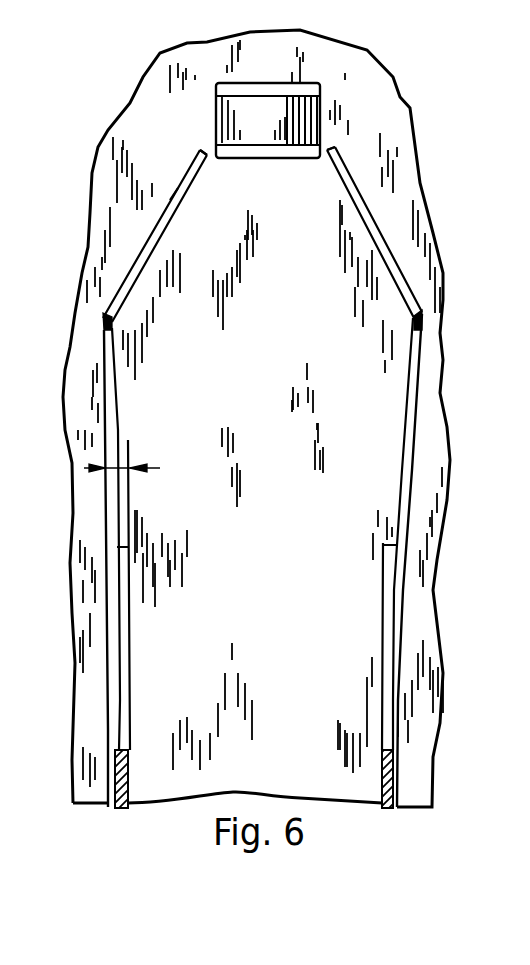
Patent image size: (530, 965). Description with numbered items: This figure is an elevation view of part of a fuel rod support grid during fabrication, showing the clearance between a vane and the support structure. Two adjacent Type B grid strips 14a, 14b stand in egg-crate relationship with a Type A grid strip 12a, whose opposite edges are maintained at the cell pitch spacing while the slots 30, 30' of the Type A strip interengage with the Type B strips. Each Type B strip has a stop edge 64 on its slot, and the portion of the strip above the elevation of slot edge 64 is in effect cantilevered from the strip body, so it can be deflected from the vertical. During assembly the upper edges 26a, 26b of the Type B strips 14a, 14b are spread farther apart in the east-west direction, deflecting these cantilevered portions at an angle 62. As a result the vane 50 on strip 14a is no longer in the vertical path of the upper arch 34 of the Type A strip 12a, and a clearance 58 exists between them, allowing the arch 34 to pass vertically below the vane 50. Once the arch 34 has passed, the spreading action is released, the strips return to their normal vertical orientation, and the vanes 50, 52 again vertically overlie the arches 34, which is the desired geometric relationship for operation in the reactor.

The Type A grid strip 12a is at (367, 58).
The upper arch 34 is at (240, 105).
The clearance 58 is at (209, 150).
The vane 50 is at (170, 197).
The vane 52 is at (343, 163).
The upper edge 26a is at (108, 315).
The upper edge 26b is at (414, 312).
The Type B grid strip 14a is at (105, 540).
The Type B grid strip 14b is at (408, 458).
The slot 30 is at (358, 628).
The left side seal 30' is at (72, 595).
The angle 62 is at (121, 465).
The stop edge 64 is at (115, 750).